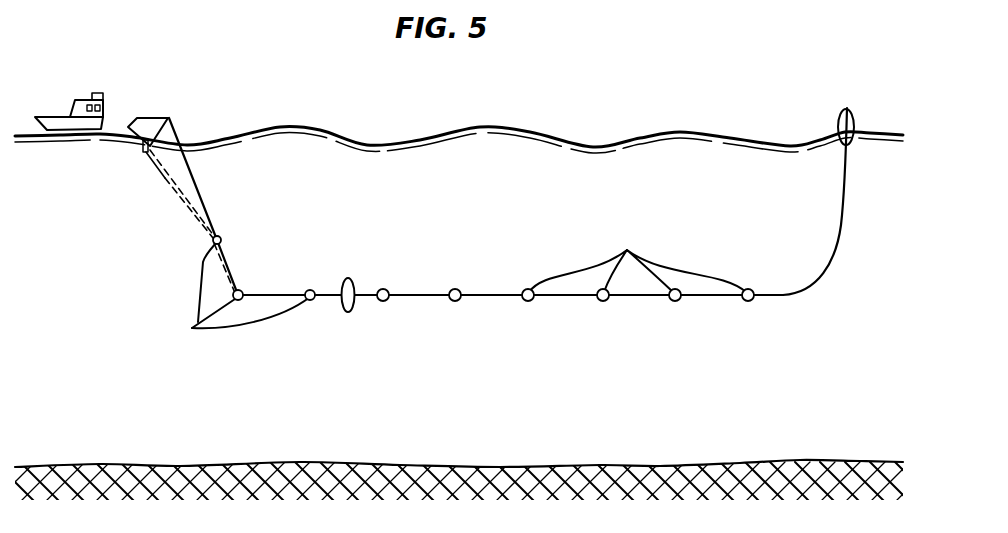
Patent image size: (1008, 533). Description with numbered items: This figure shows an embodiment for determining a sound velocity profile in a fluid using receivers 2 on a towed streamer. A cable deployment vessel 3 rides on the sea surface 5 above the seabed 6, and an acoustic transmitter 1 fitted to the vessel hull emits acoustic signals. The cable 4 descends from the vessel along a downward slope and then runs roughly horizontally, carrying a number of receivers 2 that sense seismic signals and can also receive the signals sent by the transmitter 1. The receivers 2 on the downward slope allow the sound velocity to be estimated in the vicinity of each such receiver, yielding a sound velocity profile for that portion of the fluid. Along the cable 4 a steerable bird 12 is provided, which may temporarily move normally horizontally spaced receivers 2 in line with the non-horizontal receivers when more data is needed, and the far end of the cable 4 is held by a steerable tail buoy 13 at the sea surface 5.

The acoustic transmitter 1 is at (143, 147).
The receiver 2 is at (193, 328).
The cable deployment vessel 3 is at (46, 115).
The seabed cable 4 is at (490, 293).
The sea surface 5 is at (648, 132).
The seabed 6 is at (143, 463).
The steerable bird 12 is at (348, 278).
The steerable tail buoy 13 is at (848, 109).